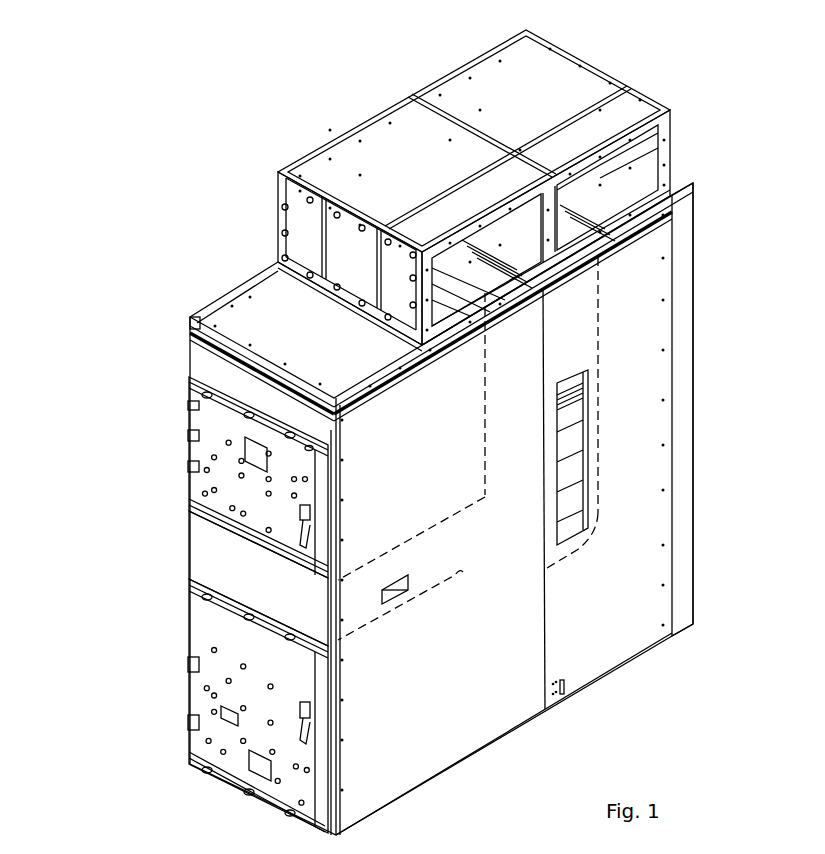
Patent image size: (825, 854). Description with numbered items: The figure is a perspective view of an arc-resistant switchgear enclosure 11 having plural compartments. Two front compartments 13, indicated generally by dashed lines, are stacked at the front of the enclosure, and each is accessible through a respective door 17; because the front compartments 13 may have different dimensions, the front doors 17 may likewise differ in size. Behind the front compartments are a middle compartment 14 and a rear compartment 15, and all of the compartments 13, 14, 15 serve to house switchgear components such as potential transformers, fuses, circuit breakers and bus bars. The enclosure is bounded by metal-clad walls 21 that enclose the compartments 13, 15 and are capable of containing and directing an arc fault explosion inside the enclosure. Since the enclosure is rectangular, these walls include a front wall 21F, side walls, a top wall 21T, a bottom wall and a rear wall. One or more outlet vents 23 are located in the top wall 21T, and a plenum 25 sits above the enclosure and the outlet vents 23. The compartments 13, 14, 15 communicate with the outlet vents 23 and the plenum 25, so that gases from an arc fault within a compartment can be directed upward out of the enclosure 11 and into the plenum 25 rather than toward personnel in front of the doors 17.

The arc-resistant switchgear enclosure 11 is at (724, 221).
The front compartment 13 is at (430, 495).
The middle compartment 14 is at (573, 352).
The rear compartment 15 is at (645, 491).
The door 17 is at (228, 443).
The walls 21 is at (622, 635).
The top wall 21T is at (265, 317).
The front wall 21F is at (233, 562).
The outlet vents 23 is at (442, 303).
The plenum 25 is at (417, 173).